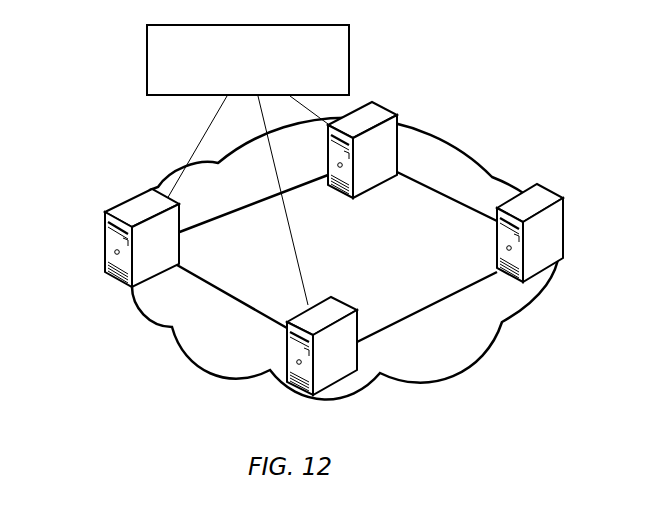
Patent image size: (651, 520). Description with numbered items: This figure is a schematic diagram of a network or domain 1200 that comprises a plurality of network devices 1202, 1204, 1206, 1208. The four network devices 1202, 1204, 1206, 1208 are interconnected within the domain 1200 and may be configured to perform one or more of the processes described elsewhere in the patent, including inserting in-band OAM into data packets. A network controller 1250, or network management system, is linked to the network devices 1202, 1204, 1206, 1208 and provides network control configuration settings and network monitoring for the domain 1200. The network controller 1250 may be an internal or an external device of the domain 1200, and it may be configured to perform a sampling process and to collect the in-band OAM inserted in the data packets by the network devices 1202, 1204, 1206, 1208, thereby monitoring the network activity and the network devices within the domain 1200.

The network or domain 1200 is at (162, 184).
The network device 1202 is at (105, 258).
The network device 1204 is at (287, 360).
The network device 1206 is at (360, 191).
The network device 1208 is at (497, 265).
The network controller 1250 is at (147, 63).